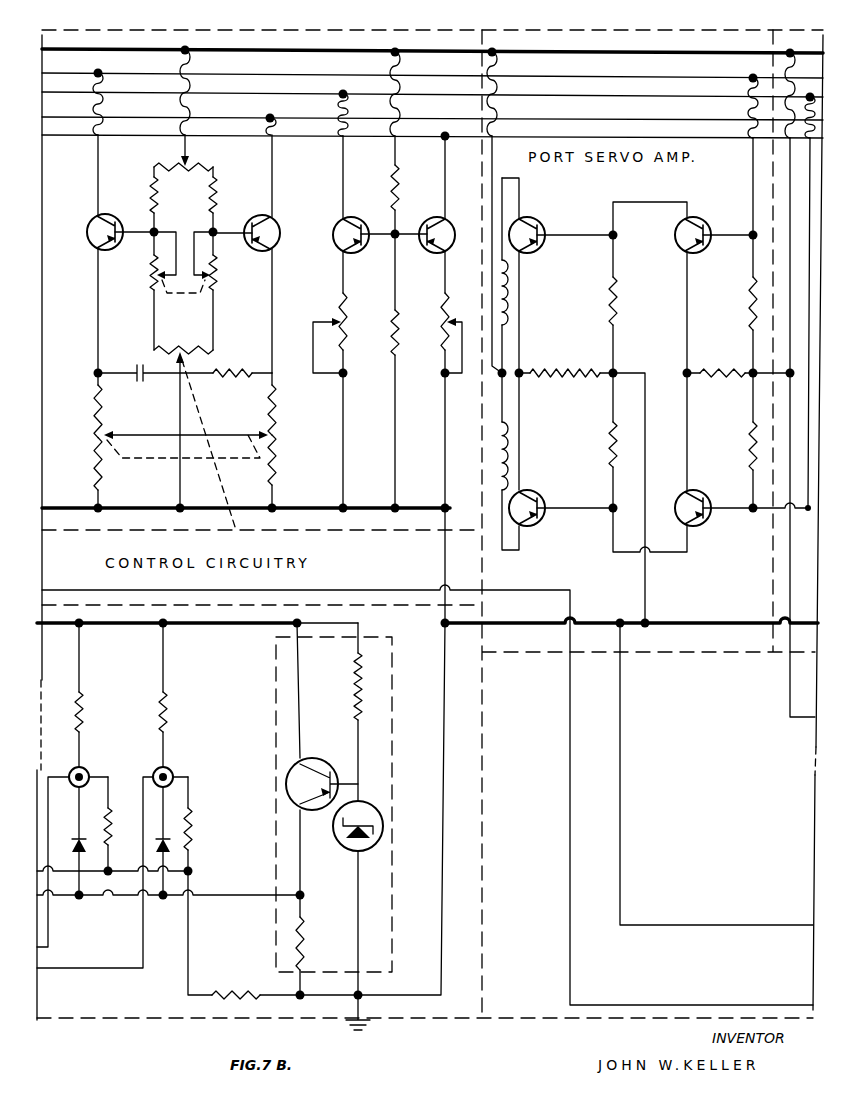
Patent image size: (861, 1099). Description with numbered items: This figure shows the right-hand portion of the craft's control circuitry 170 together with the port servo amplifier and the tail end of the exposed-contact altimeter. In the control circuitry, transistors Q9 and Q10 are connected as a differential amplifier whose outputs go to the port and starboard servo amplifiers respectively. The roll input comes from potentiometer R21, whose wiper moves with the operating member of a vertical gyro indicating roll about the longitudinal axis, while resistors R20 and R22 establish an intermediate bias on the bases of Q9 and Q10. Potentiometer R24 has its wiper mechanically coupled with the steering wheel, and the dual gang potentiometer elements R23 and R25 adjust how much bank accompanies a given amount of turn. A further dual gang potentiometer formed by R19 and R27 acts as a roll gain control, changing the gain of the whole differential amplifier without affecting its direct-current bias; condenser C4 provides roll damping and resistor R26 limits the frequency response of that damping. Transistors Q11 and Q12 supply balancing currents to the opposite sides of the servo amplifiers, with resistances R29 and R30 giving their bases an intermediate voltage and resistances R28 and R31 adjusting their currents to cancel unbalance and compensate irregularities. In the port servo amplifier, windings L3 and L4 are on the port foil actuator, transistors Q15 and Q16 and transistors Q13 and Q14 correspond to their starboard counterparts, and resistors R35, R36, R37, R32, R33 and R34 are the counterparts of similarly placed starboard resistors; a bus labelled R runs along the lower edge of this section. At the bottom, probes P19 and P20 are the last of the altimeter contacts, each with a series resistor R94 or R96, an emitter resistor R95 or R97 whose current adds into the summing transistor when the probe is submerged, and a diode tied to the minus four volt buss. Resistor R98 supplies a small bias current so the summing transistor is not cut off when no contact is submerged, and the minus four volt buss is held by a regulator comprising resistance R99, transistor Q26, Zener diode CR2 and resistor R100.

The transistor Q9 is at (106, 221).
The resistor R20 is at (133, 202).
The potentiometer R21 is at (189, 109).
The resistor R22 is at (230, 202).
The transistor Q10 is at (261, 244).
The dual gang potentiometer element R23 is at (141, 291).
The dual gang potentiometer element R25 is at (206, 291).
The potentiometer R24 is at (183, 419).
The condenser C4 is at (154, 386).
The resistor R26 is at (240, 388).
The dual gang potentiometer element R19 is at (157, 443).
The dual gang potentiometer element R27 is at (289, 443).
The resistance R29 is at (377, 143).
The transistor Q11 is at (364, 192).
The transistor Q12 is at (425, 213).
The resistance R28 is at (322, 403).
The resistance R30 is at (378, 373).
The resistance R31 is at (447, 334).
The transistor Q13 is at (550, 213).
The winding L3 is at (508, 292).
The winding L4 is at (508, 457).
The resistor R32 is at (584, 490).
The resistor R33 is at (648, 287).
The resistor R34 is at (626, 462).
The transistor Q14 is at (561, 449).
The transistor Q15 is at (716, 288).
The resistor R36 is at (734, 226).
The resistor R35 is at (741, 213).
The resistor R37 is at (734, 443).
The transistor Q16 is at (745, 310).
The bus line R is at (734, 622).
The line 170 is at (80, 590).
The resistor R94 is at (99, 693).
The resistor R96 is at (183, 693).
The probe P19 is at (77, 848).
The probe P20 is at (123, 858).
The emitter resistor R95 is at (112, 826).
The emitter resistor R97 is at (168, 886).
The resistor R98 is at (287, 985).
The resistance R99 is at (337, 712).
The transistor Q26 is at (322, 759).
The Zener diode CR2 is at (348, 915).
The resistor R100 is at (322, 945).